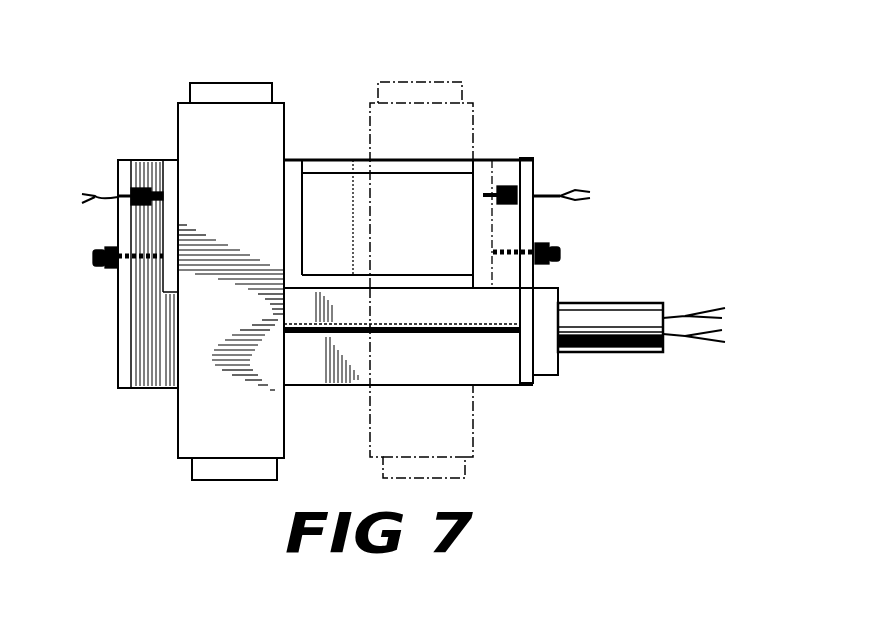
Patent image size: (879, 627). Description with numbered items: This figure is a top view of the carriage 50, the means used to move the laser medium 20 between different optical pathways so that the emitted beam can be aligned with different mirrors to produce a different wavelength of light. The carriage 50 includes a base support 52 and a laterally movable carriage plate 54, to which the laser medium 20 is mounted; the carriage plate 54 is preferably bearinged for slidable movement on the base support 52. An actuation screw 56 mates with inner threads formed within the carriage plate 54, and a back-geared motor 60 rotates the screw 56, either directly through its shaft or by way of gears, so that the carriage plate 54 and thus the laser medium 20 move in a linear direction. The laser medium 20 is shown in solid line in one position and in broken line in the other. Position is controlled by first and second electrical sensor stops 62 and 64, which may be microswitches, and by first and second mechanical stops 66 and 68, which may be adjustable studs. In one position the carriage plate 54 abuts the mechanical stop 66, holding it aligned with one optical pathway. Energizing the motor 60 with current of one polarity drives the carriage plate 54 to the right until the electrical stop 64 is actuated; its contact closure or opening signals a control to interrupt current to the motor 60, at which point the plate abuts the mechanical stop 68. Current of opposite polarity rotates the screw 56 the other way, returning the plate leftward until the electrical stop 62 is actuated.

The carriage 50 is at (152, 85).
The laser medium 20 is at (237, 85).
The base support 52 is at (487, 372).
The carriage plate 54 is at (297, 193).
The actuation screw 56 is at (397, 338).
The back-geared motor 60 is at (598, 303).
The first electrical sensor stop 62 is at (148, 188).
The second electrical sensor stop 64 is at (503, 187).
The first mechanical stop 66 is at (140, 267).
The second mechanical stop 68 is at (508, 245).